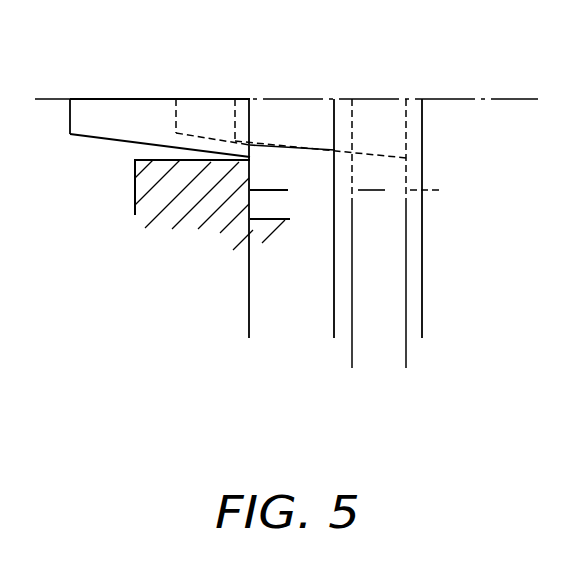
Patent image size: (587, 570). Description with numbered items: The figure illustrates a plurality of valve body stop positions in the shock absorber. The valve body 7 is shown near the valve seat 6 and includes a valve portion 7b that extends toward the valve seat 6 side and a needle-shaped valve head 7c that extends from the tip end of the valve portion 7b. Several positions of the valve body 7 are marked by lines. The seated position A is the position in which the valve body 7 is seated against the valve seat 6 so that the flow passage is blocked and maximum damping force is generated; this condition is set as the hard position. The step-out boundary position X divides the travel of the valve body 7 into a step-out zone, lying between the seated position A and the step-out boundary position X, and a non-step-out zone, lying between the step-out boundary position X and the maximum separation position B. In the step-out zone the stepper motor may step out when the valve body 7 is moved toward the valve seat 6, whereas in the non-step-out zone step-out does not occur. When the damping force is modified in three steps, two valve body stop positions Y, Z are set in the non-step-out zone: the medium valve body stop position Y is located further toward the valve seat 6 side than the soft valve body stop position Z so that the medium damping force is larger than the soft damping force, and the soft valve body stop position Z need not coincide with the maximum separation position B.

The valve seat 6 is at (251, 206).
The valve body 7 is at (83, 141).
The valve portion 7b is at (248, 212).
The needle-shaped valve head 7c is at (118, 141).
The seated position A is at (249, 234).
The step-out boundary position X is at (333, 234).
The medium valve body stop position Y is at (351, 249).
The soft valve body stop position Z is at (399, 248).
The maximum separation position B is at (423, 235).